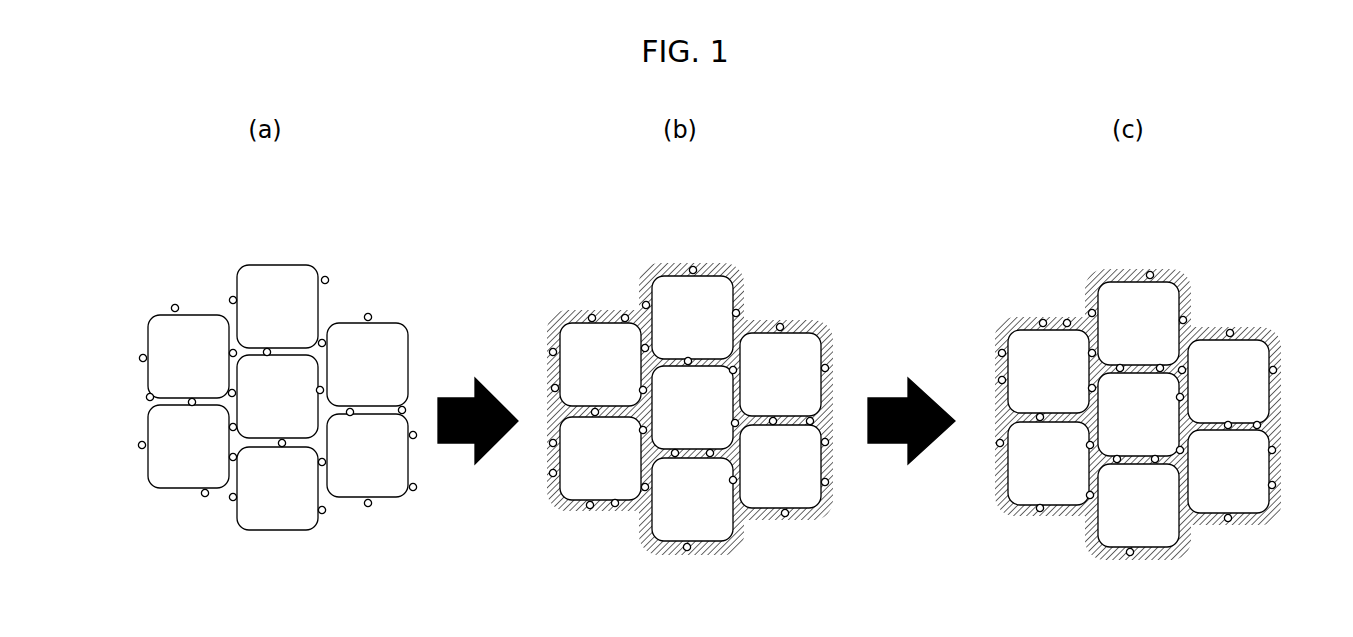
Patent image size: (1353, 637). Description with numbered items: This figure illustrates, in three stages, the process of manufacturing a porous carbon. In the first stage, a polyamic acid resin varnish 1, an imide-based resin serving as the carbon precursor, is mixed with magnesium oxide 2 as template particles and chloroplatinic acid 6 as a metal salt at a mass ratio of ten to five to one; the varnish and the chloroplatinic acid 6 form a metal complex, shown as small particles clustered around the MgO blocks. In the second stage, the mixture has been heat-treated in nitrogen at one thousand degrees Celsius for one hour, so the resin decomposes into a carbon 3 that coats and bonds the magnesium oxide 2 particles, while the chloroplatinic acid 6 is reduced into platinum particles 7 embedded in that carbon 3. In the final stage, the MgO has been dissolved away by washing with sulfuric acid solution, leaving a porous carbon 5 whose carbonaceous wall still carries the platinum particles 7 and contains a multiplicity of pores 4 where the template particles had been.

The polyamic acid resin varnish 1 is at (287, 371).
The magnesium oxide 2 is at (470, 401).
The carbon 3 is at (705, 265).
The pore 4 is at (1128, 305).
The porous carbon 5 is at (1166, 396).
The chloroplatinic acid 6 is at (372, 315).
The platinum particle 7 is at (785, 324).